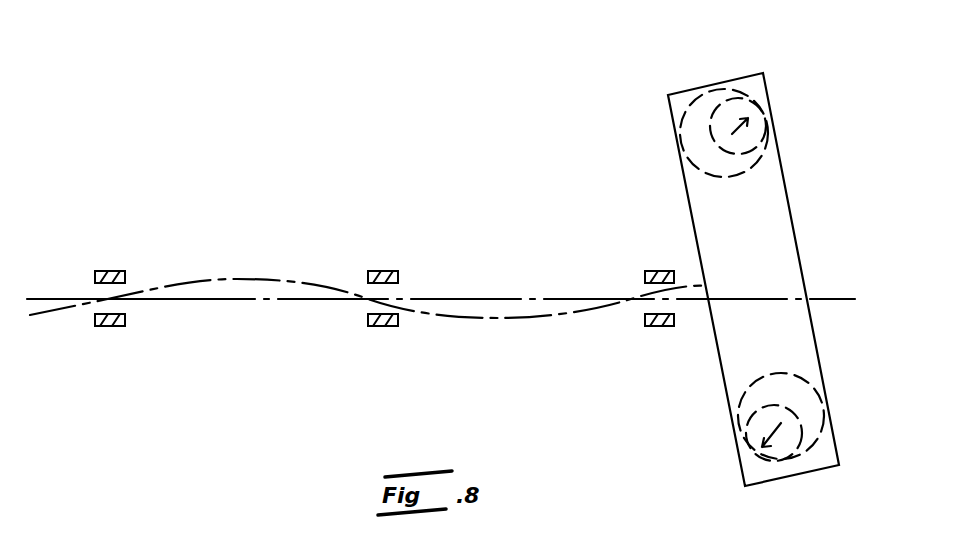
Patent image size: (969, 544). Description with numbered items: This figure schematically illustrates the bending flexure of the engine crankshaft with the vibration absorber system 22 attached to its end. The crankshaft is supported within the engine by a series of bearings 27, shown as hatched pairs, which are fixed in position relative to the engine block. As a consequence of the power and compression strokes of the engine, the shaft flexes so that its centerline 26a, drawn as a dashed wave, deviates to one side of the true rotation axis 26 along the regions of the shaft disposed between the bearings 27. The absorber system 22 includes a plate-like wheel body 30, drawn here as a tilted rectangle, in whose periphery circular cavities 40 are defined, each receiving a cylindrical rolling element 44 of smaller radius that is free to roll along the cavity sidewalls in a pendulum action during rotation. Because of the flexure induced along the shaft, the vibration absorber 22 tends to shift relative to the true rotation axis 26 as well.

The vibration absorber system 22 is at (746, 244).
The true rotation axis 26 is at (60, 298).
The centerline of the shaft 26a is at (258, 277).
The bearings 27 is at (108, 328).
The wheel body 30 is at (785, 175).
The circular cavities 40 is at (684, 150).
The cylindrical rolling elements 44 is at (690, 112).